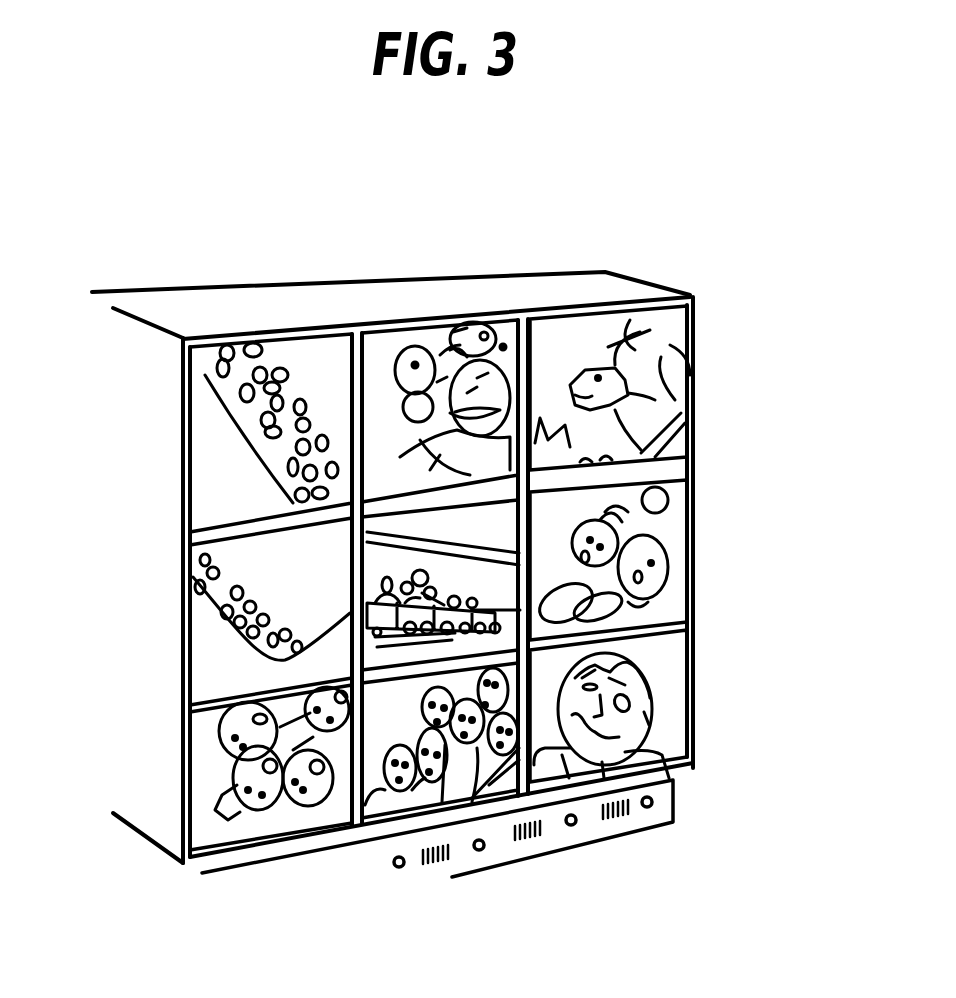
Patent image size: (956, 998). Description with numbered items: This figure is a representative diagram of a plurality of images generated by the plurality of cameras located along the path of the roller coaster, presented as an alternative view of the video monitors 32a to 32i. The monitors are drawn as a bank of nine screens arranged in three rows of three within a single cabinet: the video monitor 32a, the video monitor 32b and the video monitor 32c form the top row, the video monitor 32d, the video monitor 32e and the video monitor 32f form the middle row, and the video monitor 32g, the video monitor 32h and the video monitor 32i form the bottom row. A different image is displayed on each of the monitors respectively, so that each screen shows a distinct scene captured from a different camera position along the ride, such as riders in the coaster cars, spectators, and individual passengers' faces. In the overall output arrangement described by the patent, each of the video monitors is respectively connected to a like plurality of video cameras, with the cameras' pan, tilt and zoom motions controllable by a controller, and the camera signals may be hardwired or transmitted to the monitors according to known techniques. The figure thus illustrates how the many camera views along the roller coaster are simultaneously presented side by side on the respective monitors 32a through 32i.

The video monitor 32a is at (303, 363).
The video monitor 32b is at (402, 342).
The video monitor 32c is at (573, 345).
The video monitor 32d is at (212, 668).
The video monitor 32e is at (490, 517).
The video monitor 32f is at (667, 532).
The video monitor 32g is at (278, 817).
The video monitor 32h is at (477, 788).
The video monitor 32i is at (630, 757).